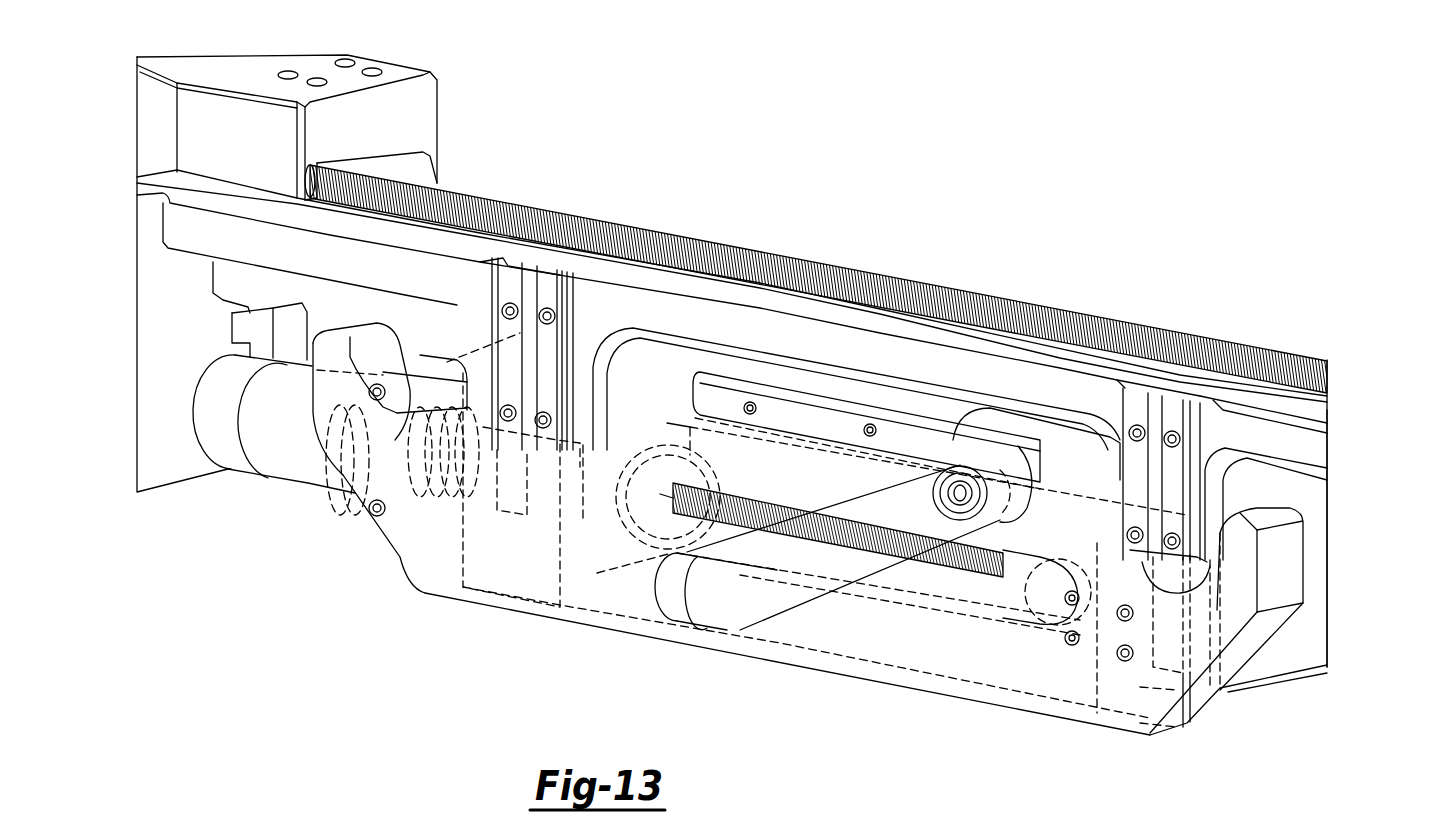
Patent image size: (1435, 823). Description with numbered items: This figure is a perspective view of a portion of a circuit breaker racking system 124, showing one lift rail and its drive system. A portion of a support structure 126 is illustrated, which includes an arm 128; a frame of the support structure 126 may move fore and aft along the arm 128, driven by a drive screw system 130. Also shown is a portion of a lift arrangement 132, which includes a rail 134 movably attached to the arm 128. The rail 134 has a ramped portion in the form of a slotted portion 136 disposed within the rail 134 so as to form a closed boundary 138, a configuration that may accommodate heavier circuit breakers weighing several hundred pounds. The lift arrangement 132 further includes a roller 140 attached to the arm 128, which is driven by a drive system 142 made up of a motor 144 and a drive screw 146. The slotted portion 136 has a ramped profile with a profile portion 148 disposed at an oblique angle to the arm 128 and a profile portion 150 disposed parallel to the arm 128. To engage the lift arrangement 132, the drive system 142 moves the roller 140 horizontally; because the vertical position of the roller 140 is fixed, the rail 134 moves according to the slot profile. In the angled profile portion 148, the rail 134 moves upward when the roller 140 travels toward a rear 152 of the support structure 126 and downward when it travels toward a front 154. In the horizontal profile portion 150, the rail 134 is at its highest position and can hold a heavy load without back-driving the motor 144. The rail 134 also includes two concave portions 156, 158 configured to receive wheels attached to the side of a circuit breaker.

The circuit breaker racking system 124 is at (985, 138).
The support structure 126 is at (548, 98).
The arm 128 is at (1333, 388).
The drive screw system 130 is at (1224, 348).
The lift arrangement 132 is at (318, 604).
The rail 134 is at (915, 688).
The slotted portion 136 is at (785, 615).
The closed boundary 138 is at (815, 597).
The roller 140 is at (990, 482).
The drive system 142 is at (222, 510).
The motor 144 is at (286, 485).
The drive screw 146 is at (812, 538).
The profile portion 148 is at (862, 498).
The profile portion 150 is at (703, 626).
The rear 152 is at (136, 221).
The front 154 is at (1330, 455).
The concave portion 156 is at (350, 462).
The concave portion 158 is at (1178, 590).